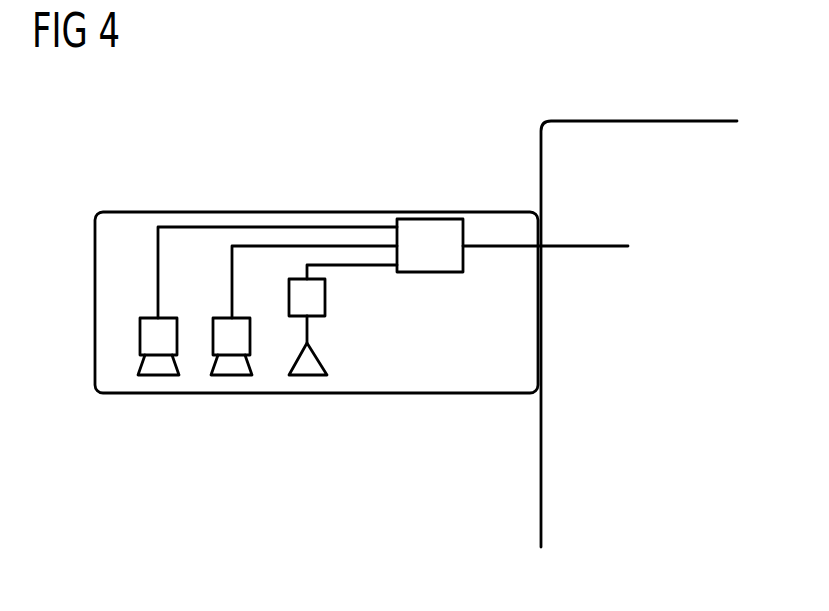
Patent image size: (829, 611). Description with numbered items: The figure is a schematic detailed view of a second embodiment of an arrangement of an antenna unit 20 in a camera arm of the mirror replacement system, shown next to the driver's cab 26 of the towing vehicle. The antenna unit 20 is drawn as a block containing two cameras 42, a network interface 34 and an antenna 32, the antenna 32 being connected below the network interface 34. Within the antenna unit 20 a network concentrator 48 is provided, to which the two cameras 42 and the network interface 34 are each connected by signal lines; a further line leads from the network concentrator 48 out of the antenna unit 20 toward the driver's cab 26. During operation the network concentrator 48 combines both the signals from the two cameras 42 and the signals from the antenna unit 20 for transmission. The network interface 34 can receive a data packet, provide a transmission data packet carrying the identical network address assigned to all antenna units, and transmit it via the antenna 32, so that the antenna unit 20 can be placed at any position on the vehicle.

The antenna unit 20 is at (383, 338).
The driver's cab 26 is at (645, 121).
The antenna 32 is at (310, 376).
The network interface 34 is at (325, 297).
The camera 42 is at (140, 336).
The network concentrator 48 is at (430, 219).